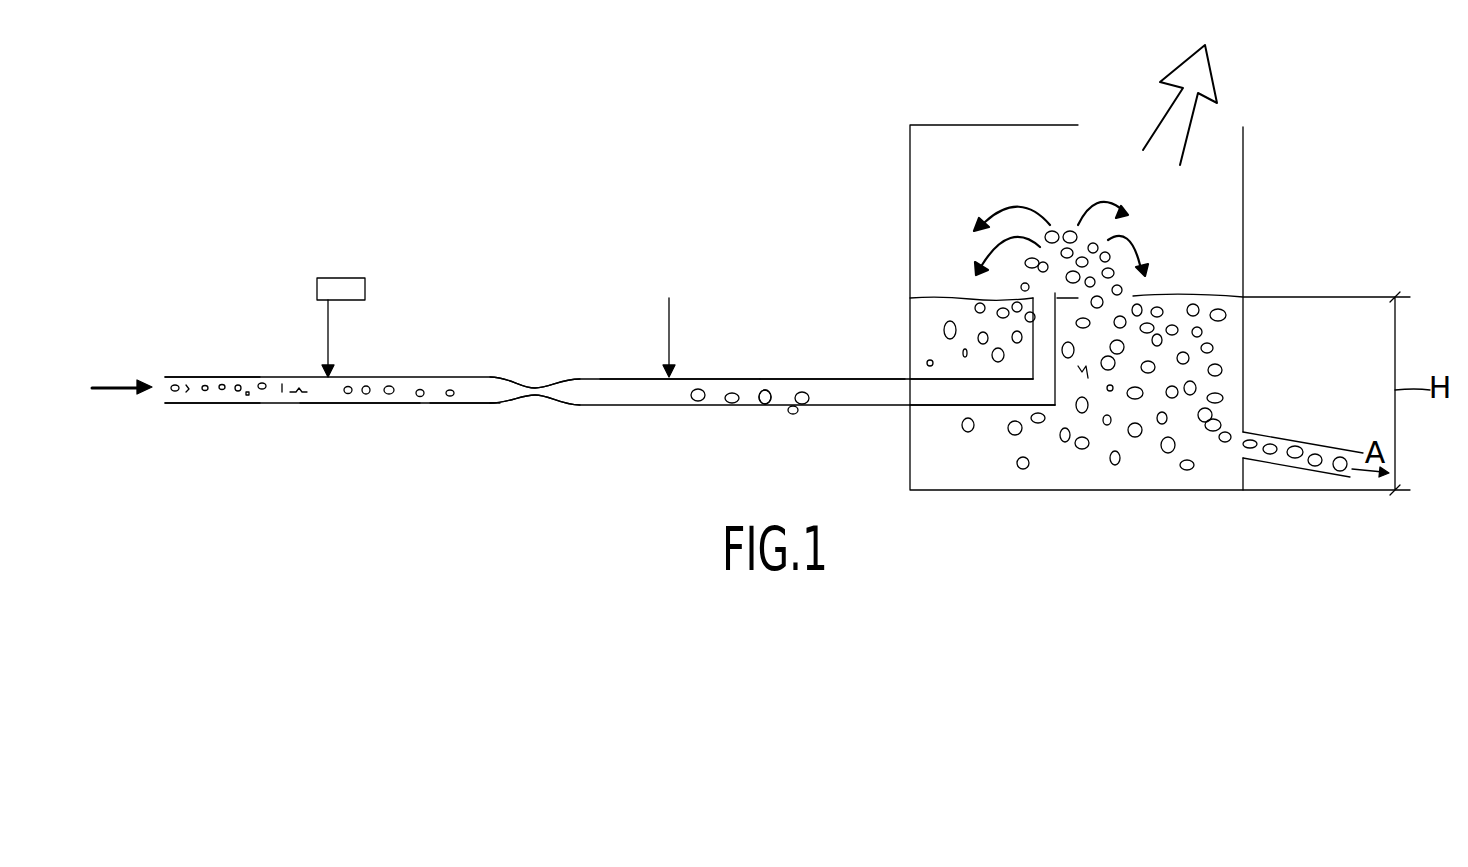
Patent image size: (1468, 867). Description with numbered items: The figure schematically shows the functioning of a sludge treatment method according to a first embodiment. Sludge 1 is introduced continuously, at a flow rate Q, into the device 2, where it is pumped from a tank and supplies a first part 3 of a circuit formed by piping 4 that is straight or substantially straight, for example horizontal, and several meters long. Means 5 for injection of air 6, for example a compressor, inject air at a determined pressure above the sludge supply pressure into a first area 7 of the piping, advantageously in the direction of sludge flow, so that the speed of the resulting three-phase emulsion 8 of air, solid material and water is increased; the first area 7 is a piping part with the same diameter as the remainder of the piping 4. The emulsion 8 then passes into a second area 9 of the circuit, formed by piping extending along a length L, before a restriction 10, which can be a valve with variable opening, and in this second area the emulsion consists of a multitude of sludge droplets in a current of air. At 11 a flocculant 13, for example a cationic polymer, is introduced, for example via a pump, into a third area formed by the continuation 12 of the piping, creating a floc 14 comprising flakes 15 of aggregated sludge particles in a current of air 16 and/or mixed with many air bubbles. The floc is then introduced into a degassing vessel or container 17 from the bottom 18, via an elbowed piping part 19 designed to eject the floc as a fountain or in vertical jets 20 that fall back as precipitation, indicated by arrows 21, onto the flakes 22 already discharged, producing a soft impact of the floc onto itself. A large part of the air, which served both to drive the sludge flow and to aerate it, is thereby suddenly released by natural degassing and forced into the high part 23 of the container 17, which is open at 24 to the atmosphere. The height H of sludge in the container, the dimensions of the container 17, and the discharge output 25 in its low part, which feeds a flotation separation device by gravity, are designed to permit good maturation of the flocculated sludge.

The sludge 1 is at (120, 394).
The device 2 is at (718, 202).
The first part of circuit 3 is at (199, 364).
The piping 4 is at (272, 407).
The means for injection of air 5 is at (367, 290).
The air 6 is at (330, 338).
The first area 7 is at (351, 414).
The three-phase emulsion 8 is at (408, 390).
The second area 9 is at (461, 415).
The restriction 10 is at (538, 380).
The introduction point of flocculant 11 is at (688, 365).
The continuation of the piping 12 is at (715, 405).
The flocculant 13 is at (667, 340).
The floc 14 is at (813, 368).
The flakes 15 is at (793, 414).
The current of air 16 is at (748, 390).
The degassing vessel or container 17 is at (908, 223).
The bottom 18 is at (890, 420).
The elbowed piping part 19 is at (1060, 405).
The vertical jets 20 is at (1058, 200).
The precipitation 21 is at (990, 203).
The flakes already discharged 22 is at (943, 330).
The high part of the container 23 is at (1255, 192).
The opening to the atmosphere 24 is at (1137, 110).
The discharge output 25 is at (1268, 463).